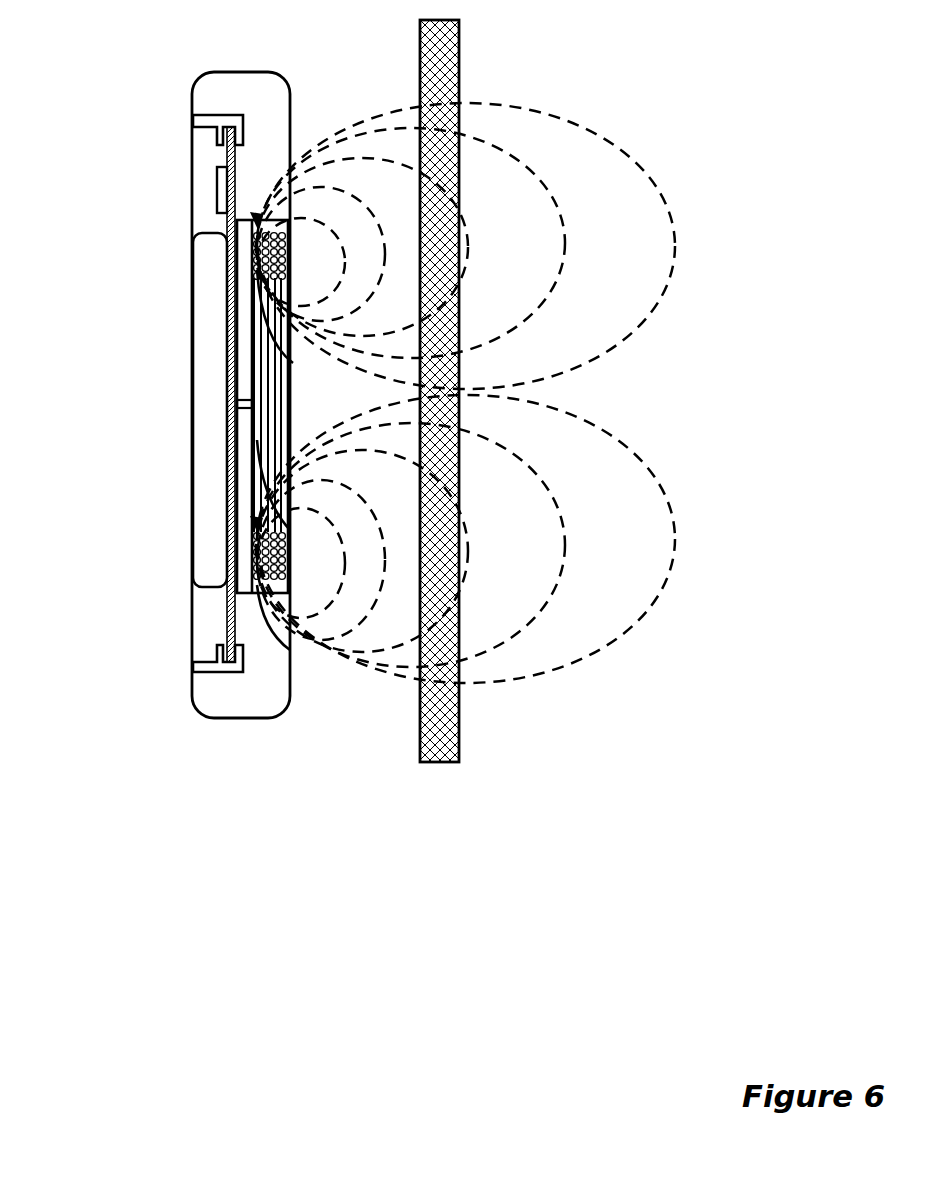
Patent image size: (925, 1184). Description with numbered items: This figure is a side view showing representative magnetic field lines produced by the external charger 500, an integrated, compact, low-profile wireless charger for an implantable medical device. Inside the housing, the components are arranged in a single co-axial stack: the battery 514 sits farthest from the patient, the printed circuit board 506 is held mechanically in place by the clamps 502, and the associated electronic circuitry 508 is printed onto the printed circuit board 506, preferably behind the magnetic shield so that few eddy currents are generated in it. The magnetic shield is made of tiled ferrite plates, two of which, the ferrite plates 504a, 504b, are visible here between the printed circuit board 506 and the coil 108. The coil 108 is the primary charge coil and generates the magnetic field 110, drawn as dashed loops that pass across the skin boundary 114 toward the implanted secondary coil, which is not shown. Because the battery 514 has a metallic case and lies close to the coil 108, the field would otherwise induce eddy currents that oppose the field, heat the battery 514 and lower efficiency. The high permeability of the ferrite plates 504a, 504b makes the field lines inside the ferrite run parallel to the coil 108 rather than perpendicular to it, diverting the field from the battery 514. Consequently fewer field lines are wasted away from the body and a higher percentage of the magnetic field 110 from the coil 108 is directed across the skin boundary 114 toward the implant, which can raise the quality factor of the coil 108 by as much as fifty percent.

The external charger 500 is at (234, 738).
The clamps 502 is at (205, 667).
The printed circuit board 506 is at (230, 224).
The battery 514 is at (210, 275).
The electronic circuitry 508 is at (217, 188).
The ferrite plate 504a is at (245, 478).
The ferrite plate 504b is at (245, 384).
The coil 108 is at (245, 562).
The magnetic field 110 is at (688, 334).
The skin boundary 114 is at (440, 762).